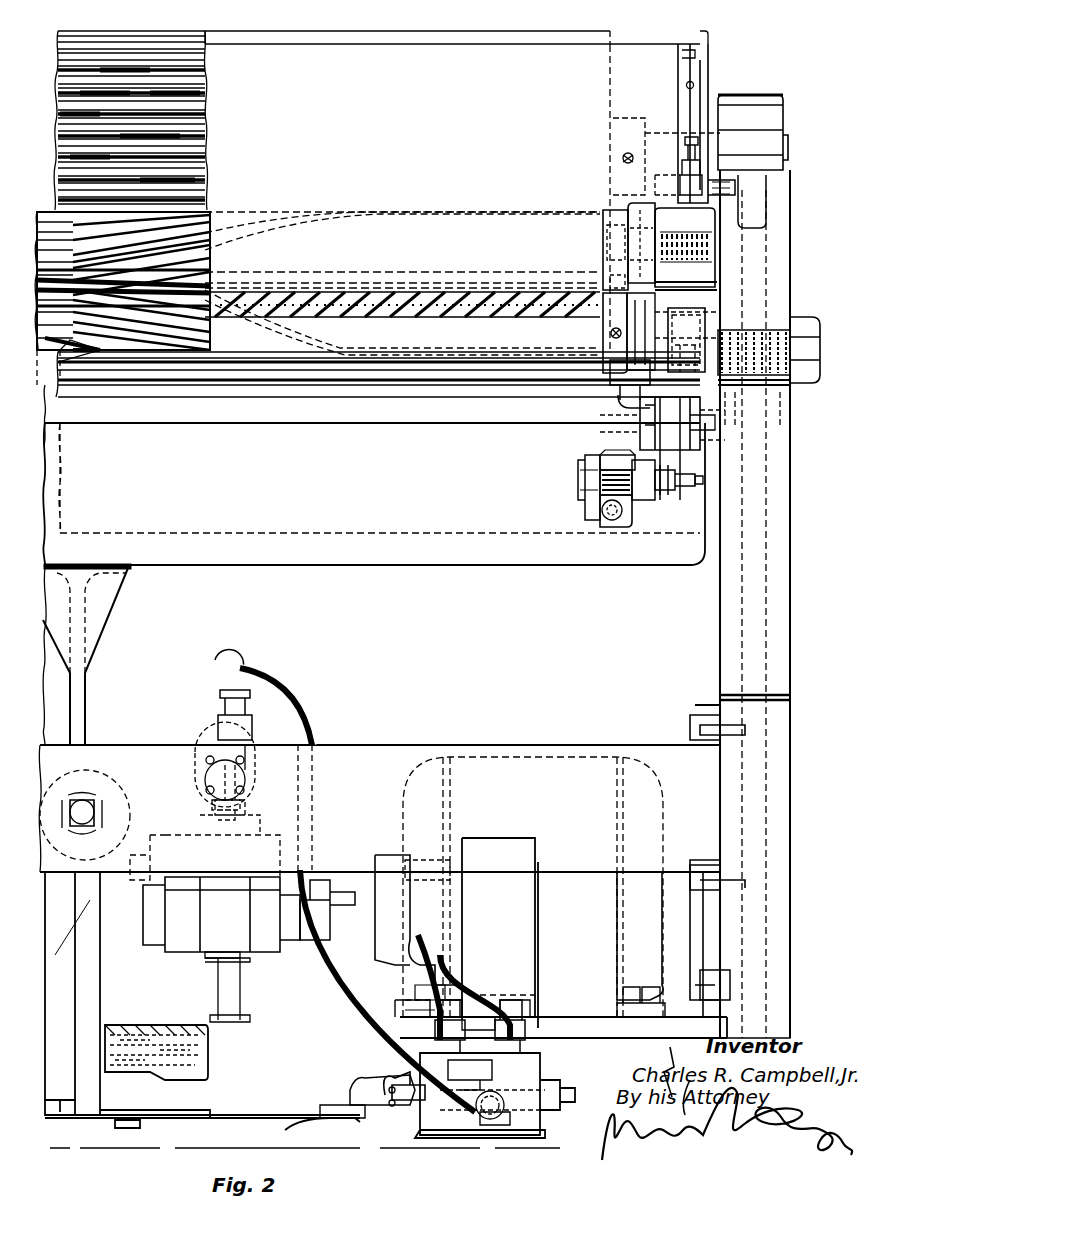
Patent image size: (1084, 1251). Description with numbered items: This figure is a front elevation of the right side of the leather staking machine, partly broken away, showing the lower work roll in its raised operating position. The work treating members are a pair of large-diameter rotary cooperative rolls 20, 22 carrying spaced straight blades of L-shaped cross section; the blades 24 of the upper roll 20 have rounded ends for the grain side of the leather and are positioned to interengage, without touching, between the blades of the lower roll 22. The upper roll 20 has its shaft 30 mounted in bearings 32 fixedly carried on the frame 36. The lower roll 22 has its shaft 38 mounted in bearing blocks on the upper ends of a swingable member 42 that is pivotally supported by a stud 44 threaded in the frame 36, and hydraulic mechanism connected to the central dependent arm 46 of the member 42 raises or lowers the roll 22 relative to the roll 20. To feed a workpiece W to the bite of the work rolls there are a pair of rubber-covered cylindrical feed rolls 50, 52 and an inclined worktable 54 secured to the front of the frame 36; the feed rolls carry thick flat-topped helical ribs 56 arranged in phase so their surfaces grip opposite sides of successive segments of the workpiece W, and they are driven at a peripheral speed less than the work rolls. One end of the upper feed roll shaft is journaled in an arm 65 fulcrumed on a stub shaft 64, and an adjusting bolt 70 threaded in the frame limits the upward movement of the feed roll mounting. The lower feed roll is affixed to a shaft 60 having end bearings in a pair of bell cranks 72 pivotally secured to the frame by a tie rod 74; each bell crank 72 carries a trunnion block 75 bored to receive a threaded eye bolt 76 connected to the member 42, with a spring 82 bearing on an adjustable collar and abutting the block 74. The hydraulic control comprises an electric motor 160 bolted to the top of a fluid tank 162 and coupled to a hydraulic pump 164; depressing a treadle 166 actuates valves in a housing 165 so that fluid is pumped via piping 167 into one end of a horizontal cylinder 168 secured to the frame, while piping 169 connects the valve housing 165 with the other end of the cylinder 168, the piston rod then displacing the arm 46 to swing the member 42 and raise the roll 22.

The rotary cooperative roll 20 is at (593, 33).
The lower work treating roll 22 is at (415, 535).
The straight blades 24 is at (208, 108).
The shaft 30 is at (652, 132).
The bearings 32 is at (736, 104).
The frame 36 is at (790, 637).
The shaft 38 is at (700, 417).
The swingable member 42 is at (255, 562).
The stud 44 is at (638, 400).
The dependent arm 46 is at (82, 702).
The cylindrical feed roll 50 is at (45, 213).
The cylindrical feed roll 52 is at (65, 377).
The inclined worktable 54 is at (668, 38).
The ribs 56 is at (244, 212).
The shaft 60 is at (637, 314).
The stub shaft 64 is at (610, 248).
The arm 65 is at (620, 217).
The adjusting bolt 70 is at (705, 138).
The bell cranks 72 is at (648, 500).
The tie rod 74 is at (410, 316).
The trunnion block 75 is at (585, 480).
The threaded eye bolt 76 is at (603, 523).
The spring 82 is at (600, 487).
The workpiece W is at (208, 268).
The electric motor 160 is at (655, 970).
The tank 162 is at (155, 1033).
The hydraulic pump 164 is at (180, 952).
The valve housing 165 is at (408, 1068).
The treadle 166 is at (285, 1123).
The piping 167 is at (420, 953).
The horizontal cylinder 168 is at (125, 779).
The piping 169 is at (474, 916).